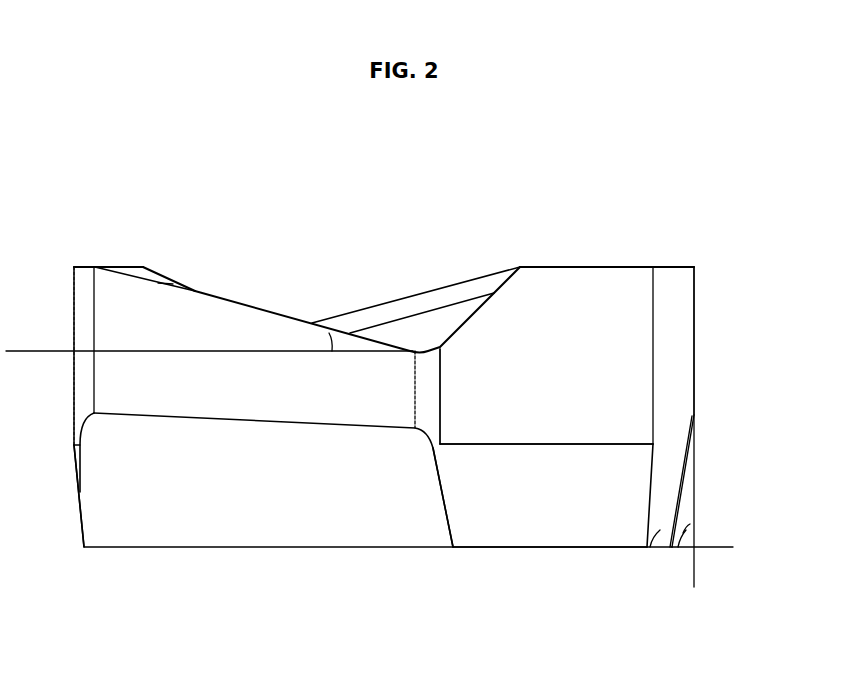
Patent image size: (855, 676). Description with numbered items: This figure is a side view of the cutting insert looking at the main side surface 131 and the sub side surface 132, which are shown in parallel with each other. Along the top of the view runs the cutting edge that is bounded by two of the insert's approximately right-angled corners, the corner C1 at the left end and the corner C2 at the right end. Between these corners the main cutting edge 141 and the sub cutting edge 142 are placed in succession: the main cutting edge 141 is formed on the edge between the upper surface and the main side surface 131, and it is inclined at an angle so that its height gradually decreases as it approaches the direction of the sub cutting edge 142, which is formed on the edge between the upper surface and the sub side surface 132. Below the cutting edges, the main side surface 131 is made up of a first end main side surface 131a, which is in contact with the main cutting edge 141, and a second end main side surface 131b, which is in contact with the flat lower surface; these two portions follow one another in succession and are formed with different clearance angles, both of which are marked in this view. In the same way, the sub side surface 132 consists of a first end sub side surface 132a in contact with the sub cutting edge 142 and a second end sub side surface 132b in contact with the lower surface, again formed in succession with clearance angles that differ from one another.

The main side surface 131 is at (235, 628).
The first end main side surface 131a is at (695, 333).
The second end main side surface 131b is at (682, 500).
The sub side surface 132 is at (488, 632).
The first end sub side surface 132a is at (515, 415).
The second end sub side surface 132b is at (578, 533).
The main cutting edge 141 is at (250, 306).
The sub cutting edge 142 is at (120, 266).
The corner C1 is at (74, 266).
The corner C2 is at (695, 265).